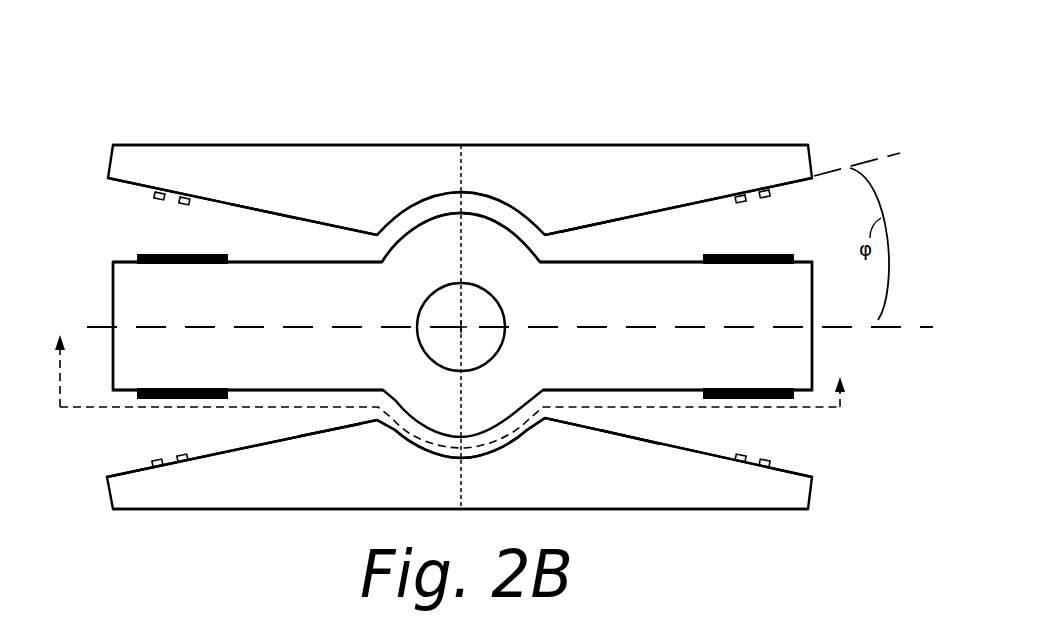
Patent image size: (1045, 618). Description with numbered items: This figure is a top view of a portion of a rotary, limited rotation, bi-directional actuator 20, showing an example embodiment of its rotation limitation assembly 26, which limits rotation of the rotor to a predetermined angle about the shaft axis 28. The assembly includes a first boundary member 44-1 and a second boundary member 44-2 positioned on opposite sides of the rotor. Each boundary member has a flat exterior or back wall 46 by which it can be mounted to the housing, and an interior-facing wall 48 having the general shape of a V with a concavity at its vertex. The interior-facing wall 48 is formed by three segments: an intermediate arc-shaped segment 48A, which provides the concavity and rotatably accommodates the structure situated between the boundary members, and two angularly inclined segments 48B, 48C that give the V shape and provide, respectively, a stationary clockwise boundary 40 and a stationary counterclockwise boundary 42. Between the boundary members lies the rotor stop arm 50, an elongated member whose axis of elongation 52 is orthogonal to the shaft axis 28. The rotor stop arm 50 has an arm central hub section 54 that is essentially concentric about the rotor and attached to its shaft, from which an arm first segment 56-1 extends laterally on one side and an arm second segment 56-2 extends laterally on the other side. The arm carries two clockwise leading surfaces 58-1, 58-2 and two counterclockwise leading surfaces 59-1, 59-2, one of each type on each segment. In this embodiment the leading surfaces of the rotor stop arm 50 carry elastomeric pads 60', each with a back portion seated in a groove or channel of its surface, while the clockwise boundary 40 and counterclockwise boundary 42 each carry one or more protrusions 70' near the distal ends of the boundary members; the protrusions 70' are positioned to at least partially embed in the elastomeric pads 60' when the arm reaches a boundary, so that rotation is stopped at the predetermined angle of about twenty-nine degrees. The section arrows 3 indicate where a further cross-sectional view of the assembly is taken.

The section line 3- 3 is at (450, 378).
The actuator 20 is at (492, 292).
The rotation limitation assembly 26 is at (750, 130).
The shaft axis 28 is at (462, 328).
The stationary clockwise boundary 40 is at (272, 213).
The stationary counterclockwise boundary 42 is at (580, 229).
The first boundary member 44-1 is at (615, 509).
The second boundary member 44-2 is at (403, 168).
The flat exterior or back wall 46 is at (210, 145).
The interior-facing wall 48 is at (465, 458).
The intermediate arc-shaped segment 48A is at (492, 200).
The segment 48B is at (292, 212).
The segment 48C is at (633, 218).
The rotor stop arm 50 is at (812, 300).
The axis of elongation 52 is at (825, 325).
The arm central hub section 54 is at (505, 253).
The arm first segment 56-1 is at (273, 309).
The arm second segment 56-2 is at (691, 309).
The clockwise leading surface 58-1 is at (238, 263).
The clockwise leading surface 58-2 is at (677, 400).
The counterclockwise leading surface 59-1 is at (203, 400).
The counterclockwise leading surface 59-2 is at (637, 263).
The elastomeric pad 60' is at (462, 332).
The protrusion 70' is at (455, 332).